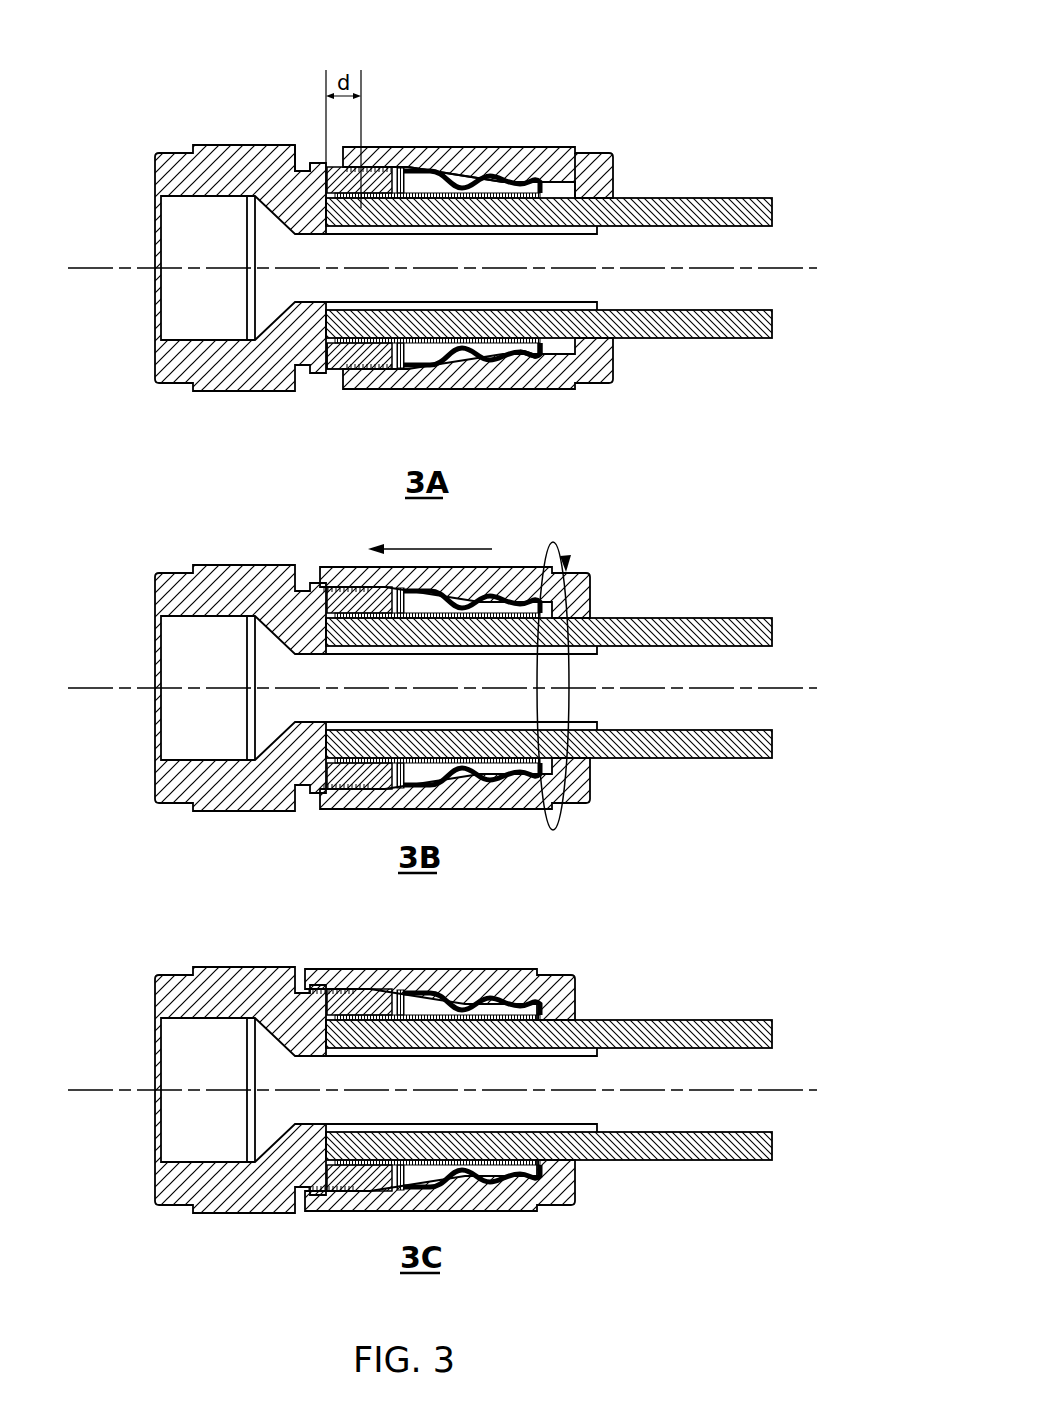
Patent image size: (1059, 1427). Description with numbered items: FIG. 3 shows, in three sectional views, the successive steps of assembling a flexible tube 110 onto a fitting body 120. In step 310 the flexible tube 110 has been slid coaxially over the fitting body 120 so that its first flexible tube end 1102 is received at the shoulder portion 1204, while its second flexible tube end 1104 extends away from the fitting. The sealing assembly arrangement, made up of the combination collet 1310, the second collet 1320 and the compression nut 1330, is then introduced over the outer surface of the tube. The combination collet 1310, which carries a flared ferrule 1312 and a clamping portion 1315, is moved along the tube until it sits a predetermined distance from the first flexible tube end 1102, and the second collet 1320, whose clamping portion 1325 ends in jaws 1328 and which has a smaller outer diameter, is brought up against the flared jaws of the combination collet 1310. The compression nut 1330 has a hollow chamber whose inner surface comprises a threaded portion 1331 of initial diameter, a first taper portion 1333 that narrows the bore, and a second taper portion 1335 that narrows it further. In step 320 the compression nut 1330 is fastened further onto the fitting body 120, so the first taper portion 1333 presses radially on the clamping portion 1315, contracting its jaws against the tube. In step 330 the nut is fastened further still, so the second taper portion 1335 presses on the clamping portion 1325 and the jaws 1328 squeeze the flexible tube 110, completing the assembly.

The flexible tube 110 is at (533, 223).
The first flexible tube end 1102 is at (319, 306).
The second flexible tube end 1104 is at (594, 324).
The fitting body 120 is at (240, 294).
The shoulder portion 1204 is at (296, 150).
The combination collet 1310 is at (433, 295).
The ferrule 1312 is at (357, 396).
The clamping portion 1315 is at (452, 312).
The second collet 1320 is at (477, 382).
The clamping portion 1325 is at (522, 105).
The jaws 1328 is at (624, 369).
The compression nut 1330 is at (478, 236).
The threaded portion 1331 is at (384, 123).
The first taper portion 1333 is at (462, 109).
The second taper portion 1335 is at (603, 143).
The step 310 is at (814, 51).
The step 320 is at (812, 517).
The step 330 is at (812, 898).